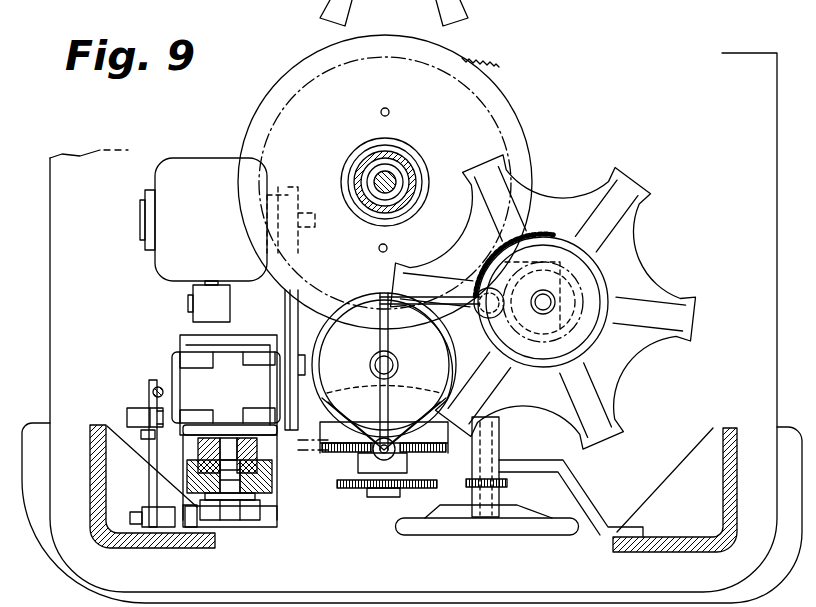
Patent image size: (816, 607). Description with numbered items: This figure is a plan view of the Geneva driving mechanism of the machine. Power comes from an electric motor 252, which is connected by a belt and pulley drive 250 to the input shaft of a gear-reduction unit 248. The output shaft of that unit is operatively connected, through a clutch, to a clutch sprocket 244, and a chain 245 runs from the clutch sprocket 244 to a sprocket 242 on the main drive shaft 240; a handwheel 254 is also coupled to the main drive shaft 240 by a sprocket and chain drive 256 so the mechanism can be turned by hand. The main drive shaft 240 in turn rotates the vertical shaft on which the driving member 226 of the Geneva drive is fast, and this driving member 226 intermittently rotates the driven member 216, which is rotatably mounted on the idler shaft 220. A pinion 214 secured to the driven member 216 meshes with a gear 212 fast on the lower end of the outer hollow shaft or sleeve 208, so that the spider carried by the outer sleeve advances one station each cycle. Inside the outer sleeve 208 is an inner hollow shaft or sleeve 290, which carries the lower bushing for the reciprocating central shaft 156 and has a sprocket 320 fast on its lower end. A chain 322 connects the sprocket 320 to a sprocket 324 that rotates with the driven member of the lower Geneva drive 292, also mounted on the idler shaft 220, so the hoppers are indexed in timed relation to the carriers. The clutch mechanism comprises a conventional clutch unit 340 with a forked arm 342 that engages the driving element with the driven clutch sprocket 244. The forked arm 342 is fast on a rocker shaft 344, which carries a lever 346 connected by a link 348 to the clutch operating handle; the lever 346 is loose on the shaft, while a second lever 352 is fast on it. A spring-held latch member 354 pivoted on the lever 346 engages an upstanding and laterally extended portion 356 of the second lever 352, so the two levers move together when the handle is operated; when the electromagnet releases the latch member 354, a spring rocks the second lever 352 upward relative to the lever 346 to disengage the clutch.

The central shaft 156 is at (367, 174).
The outer hollow shaft or sleeve 208 is at (421, 176).
The gear 212 is at (500, 76).
The pinion 214 is at (605, 266).
The driven member 216 is at (643, 218).
The idler shaft 220 is at (544, 315).
The driving member 226 is at (384, 371).
The main drive shaft 240 is at (395, 478).
The sprocket 242 is at (346, 458).
The clutch sprocket 244 is at (268, 458).
The chain 245 is at (384, 407).
The gear-reduction unit 248 is at (180, 358).
The belt and pulley drive 250 is at (285, 298).
The electric motor 252 is at (153, 266).
The handwheel 254 is at (506, 546).
The sprocket and chain drive 256 is at (448, 481).
The inner hollow shaft or sleeve 290 is at (373, 161).
The lower Geneva drive 292 is at (565, 295).
The sprocket 320 is at (488, 101).
The chain 322 is at (505, 172).
The sprocket 324 is at (572, 300).
The clutch unit 340 is at (291, 499).
The forked arm 342 is at (264, 522).
The rocker shaft 344 is at (188, 535).
The lever 346 is at (148, 474).
The link 348 is at (157, 386).
The second lever 352 is at (158, 540).
The spring-held latch member 354 is at (145, 437).
The upstanding and laterally extended portion 356 is at (128, 410).